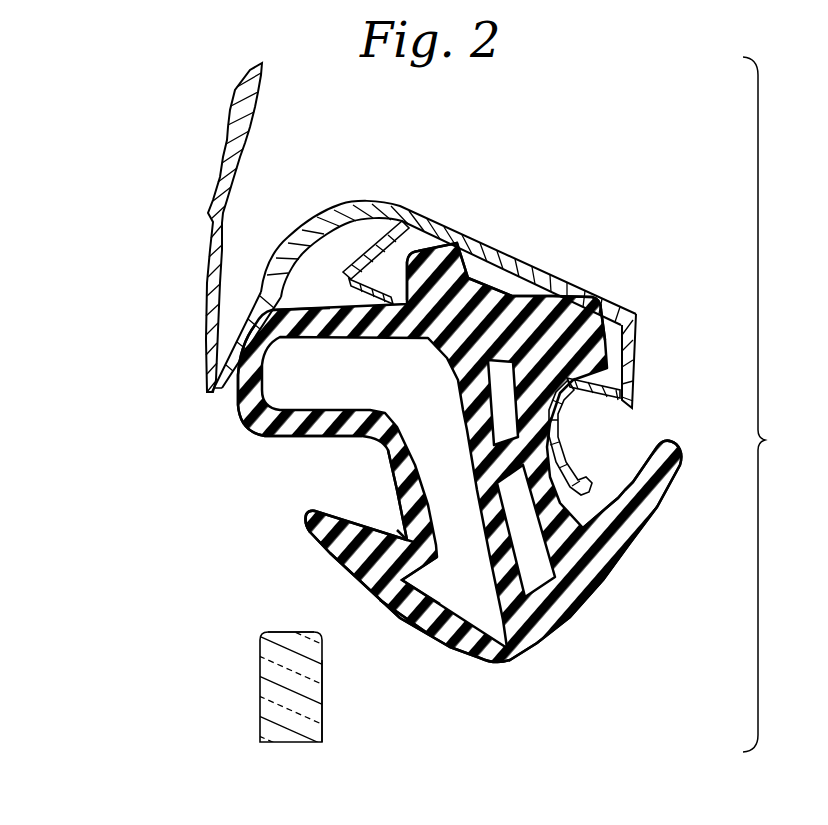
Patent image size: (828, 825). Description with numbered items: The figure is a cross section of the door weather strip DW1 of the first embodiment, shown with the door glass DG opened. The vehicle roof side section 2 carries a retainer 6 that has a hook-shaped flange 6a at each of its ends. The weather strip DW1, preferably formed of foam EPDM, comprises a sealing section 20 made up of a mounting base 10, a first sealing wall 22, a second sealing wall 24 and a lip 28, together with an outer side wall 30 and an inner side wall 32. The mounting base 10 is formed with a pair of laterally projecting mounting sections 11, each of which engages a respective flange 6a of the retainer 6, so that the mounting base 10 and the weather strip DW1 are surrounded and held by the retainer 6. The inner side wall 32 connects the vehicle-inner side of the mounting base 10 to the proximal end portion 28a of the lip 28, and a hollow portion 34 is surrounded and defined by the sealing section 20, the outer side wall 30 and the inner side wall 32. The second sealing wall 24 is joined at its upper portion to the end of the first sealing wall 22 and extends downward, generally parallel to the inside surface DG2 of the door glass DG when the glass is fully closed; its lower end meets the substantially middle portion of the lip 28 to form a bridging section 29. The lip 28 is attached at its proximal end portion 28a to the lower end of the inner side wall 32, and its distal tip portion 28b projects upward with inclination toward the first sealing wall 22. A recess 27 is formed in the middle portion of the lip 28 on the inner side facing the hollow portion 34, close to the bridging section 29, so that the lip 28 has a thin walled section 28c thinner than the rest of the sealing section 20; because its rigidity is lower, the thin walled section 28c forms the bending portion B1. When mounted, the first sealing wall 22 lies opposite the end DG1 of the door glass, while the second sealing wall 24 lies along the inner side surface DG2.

The roof side section 2 is at (333, 207).
The retainer 6 is at (636, 333).
The hook-shaped flange 6a is at (368, 252).
The mounting base 10 is at (495, 290).
The mounting section 11 is at (431, 246).
The sealing section 20 is at (246, 496).
The first sealing wall 22 is at (262, 436).
The second sealing wall 24 is at (394, 481).
The recess 27 is at (405, 581).
The lip 28 is at (312, 546).
The proximal end portion 28a is at (490, 664).
The tip portion 28b is at (304, 514).
The thin walled section 28c is at (411, 622).
The bending portion B1 is at (411, 622).
The bridging section 29 is at (407, 540).
The outer side wall 30 is at (279, 312).
The inner side wall 32 is at (654, 540).
The hollow portion 34 is at (368, 388).
The door glass DG is at (285, 740).
The end of door glass DG1 is at (270, 633).
The inside surface of door glass DG2 is at (323, 722).
The door weather strip DW1 is at (122, 611).